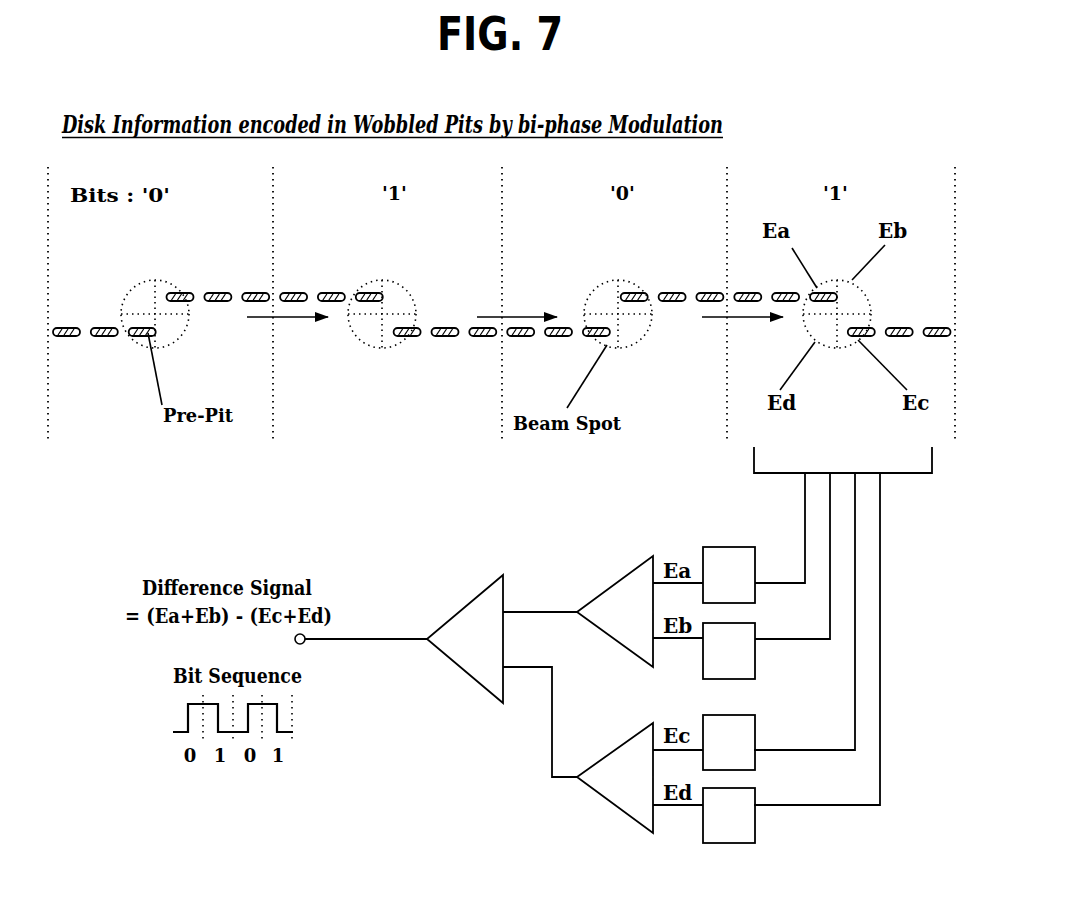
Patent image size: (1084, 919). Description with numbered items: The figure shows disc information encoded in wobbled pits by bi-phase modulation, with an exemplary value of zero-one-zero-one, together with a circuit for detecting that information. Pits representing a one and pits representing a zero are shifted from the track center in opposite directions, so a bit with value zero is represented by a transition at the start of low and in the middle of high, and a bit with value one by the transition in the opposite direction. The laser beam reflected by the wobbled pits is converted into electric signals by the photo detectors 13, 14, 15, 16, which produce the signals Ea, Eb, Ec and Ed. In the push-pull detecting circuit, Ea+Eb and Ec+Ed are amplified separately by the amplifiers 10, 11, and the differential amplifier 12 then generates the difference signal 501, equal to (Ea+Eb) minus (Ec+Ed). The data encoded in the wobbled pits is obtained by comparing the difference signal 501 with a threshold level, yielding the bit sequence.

The amplifier 10 is at (618, 580).
The amplifier 11 is at (620, 748).
The differential amplifier 12 is at (467, 608).
The photo detector 13 is at (755, 548).
The photo detector 14 is at (755, 663).
The photo detector 15 is at (754, 740).
The photo detector 16 is at (754, 823).
The difference signal 501 is at (400, 639).